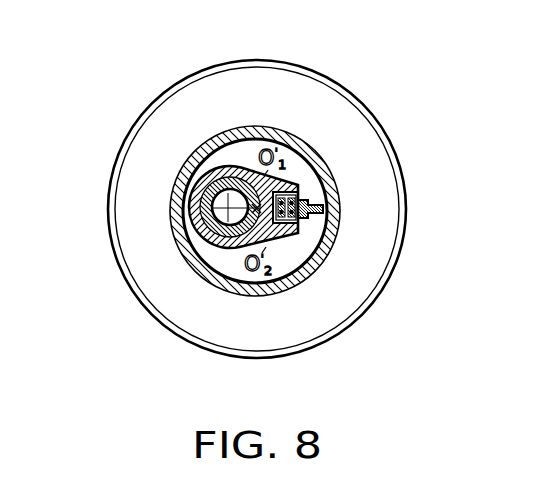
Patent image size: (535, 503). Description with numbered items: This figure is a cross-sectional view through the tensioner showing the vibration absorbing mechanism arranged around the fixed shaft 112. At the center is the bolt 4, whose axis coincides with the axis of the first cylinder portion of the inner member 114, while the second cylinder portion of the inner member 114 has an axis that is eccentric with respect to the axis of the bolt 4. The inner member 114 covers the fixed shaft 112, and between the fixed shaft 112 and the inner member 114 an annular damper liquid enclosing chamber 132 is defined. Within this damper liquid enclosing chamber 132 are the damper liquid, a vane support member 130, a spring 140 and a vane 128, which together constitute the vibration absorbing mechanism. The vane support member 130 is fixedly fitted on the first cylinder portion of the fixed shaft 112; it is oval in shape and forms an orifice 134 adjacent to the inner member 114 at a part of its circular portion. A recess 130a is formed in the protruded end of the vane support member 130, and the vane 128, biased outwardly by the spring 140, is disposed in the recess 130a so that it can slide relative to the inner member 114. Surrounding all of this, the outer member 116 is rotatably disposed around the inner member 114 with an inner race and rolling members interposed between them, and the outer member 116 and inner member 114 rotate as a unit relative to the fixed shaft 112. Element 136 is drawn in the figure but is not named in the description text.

The bolt 4 is at (210, 197).
The fixed shaft 112 is at (193, 245).
The inner member 114 is at (310, 157).
The outer member 116 is at (242, 62).
The vane 128 is at (337, 228).
The vane support member 130 is at (288, 270).
The recess 130a is at (297, 177).
The damper liquid enclosing chamber 132 is at (290, 162).
The orifice 134 is at (187, 202).
The spring plunger 136 is at (325, 210).
The spring 140 is at (278, 235).